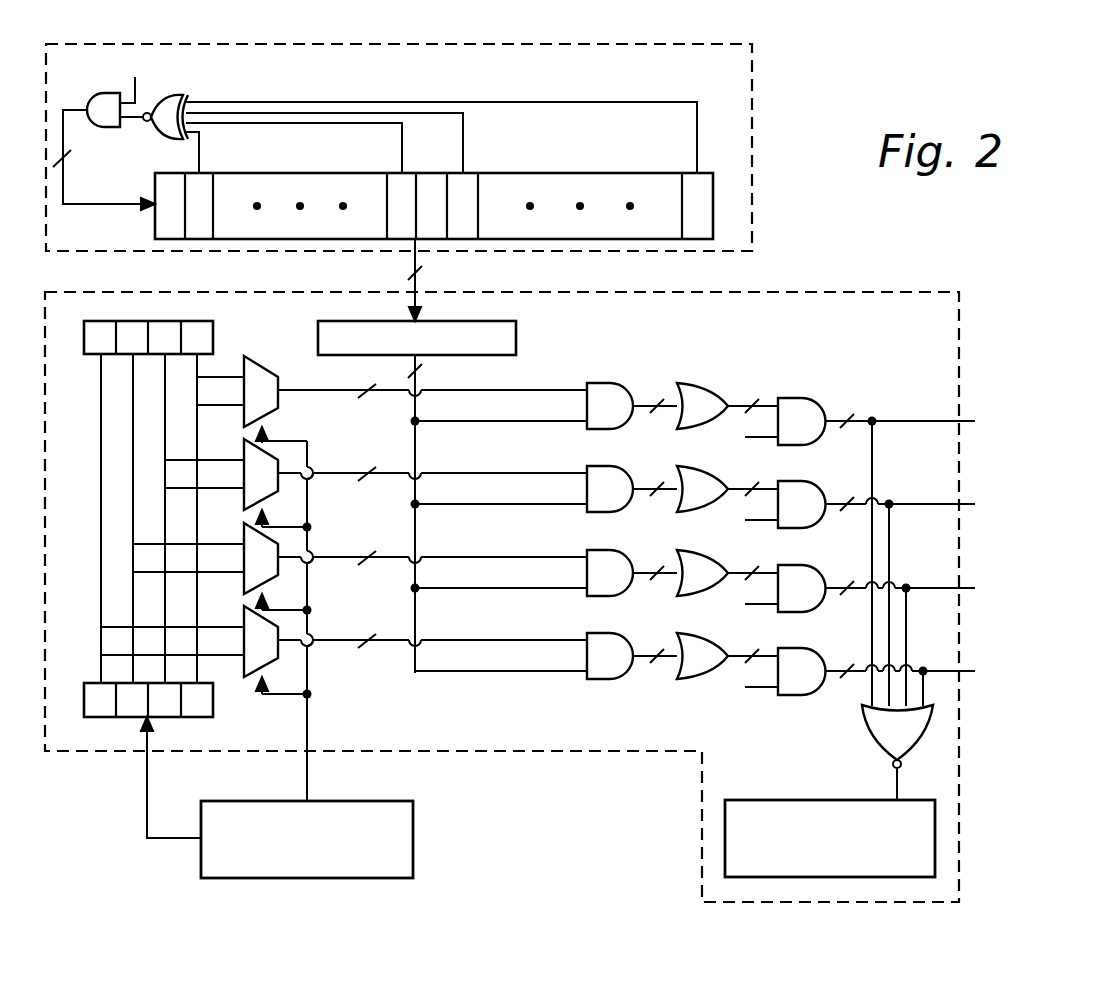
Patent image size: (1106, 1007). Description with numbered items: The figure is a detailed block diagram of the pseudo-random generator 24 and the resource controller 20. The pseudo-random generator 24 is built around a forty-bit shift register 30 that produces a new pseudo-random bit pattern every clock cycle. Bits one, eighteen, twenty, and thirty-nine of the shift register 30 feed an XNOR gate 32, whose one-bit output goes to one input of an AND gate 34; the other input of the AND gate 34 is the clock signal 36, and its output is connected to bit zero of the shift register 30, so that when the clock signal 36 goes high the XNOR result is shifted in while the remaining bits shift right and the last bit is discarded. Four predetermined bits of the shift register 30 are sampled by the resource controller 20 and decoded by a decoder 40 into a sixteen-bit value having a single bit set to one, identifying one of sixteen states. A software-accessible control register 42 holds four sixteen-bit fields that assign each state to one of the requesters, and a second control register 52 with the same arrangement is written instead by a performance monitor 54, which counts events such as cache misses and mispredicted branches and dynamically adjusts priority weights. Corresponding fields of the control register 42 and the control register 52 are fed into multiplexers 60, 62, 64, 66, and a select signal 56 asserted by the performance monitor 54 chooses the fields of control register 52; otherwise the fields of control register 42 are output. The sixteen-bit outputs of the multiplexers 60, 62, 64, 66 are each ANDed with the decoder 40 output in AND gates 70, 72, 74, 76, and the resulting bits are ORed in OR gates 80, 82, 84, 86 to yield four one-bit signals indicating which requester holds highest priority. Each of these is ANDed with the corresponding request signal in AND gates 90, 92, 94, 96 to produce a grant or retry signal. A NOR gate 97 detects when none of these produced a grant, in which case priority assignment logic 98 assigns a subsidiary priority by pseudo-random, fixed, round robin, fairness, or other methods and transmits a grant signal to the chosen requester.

The resource controller 20 is at (912, 292).
The pseudo-random generator 24 is at (752, 89).
The shift register 30 is at (518, 173).
The XNOR gate 32 is at (165, 140).
The AND gate 34 is at (95, 92).
The clock signal 36 is at (160, 95).
The decoder 40 is at (516, 338).
The control register 42 is at (213, 338).
The control register 52 is at (213, 701).
The performance monitor 54 is at (413, 825).
The select signal 56 is at (307, 712).
The multiplexer 60 is at (392, 399).
The multiplexer 62 is at (376, 483).
The multiplexer 64 is at (360, 566).
The multiplexer 66 is at (344, 650).
The AND gate 70 is at (632, 403).
The AND gate 72 is at (632, 486).
The AND gate 74 is at (632, 570).
The AND gate 76 is at (632, 653).
The OR gate 80 is at (696, 415).
The OR gate 82 is at (696, 498).
The OR gate 84 is at (696, 582).
The OR gate 86 is at (696, 665).
The AND gate 90 is at (913, 419).
The AND gate 92 is at (913, 502).
The AND gate 94 is at (913, 586).
The AND gate 96 is at (913, 669).
The NOR gate 97 is at (897, 610).
The priority assignment logic 98 is at (755, 800).